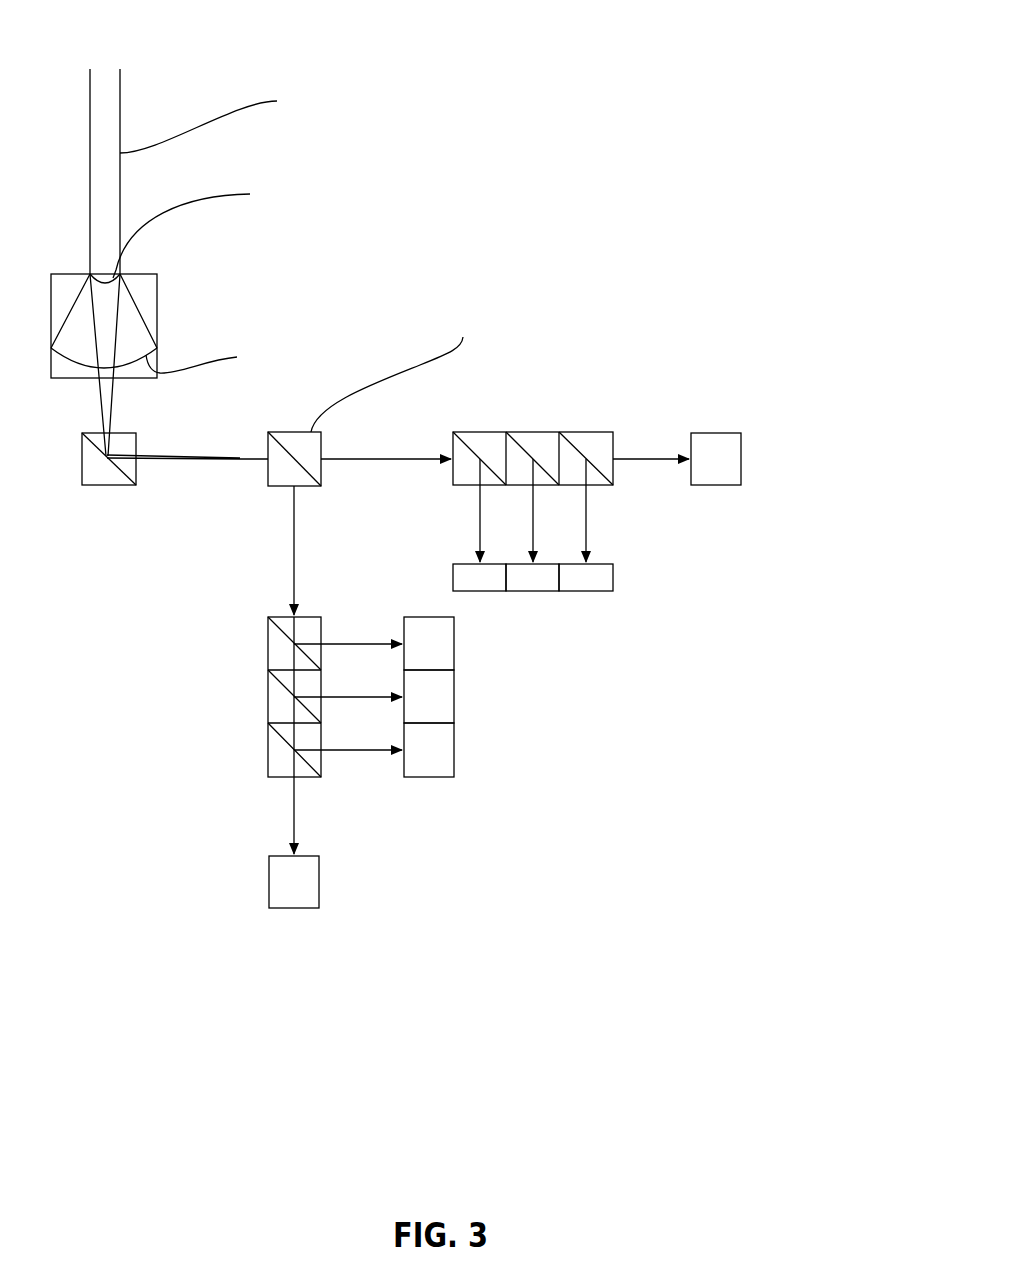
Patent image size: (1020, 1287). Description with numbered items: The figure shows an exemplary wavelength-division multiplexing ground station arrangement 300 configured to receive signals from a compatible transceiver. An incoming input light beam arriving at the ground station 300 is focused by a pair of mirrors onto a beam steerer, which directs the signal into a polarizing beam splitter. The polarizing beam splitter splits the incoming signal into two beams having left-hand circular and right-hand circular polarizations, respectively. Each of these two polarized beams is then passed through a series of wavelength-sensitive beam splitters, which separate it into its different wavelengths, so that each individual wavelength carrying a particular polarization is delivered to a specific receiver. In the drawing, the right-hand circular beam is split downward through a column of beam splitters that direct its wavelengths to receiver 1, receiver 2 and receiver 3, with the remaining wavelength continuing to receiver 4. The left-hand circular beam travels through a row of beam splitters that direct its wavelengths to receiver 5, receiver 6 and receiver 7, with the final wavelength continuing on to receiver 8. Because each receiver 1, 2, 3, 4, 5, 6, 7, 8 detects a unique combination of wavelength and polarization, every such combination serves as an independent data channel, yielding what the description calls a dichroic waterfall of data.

The optical receiver system 300 is at (600, 150).
The receiver 1 is at (454, 633).
The receiver 2 is at (454, 687).
The receiver 3 is at (454, 741).
The receiver 4 is at (319, 877).
The receiver 5 is at (453, 566).
The receiver 6 is at (545, 591).
The receiver 7 is at (613, 568).
The receiver 8 is at (716, 433).